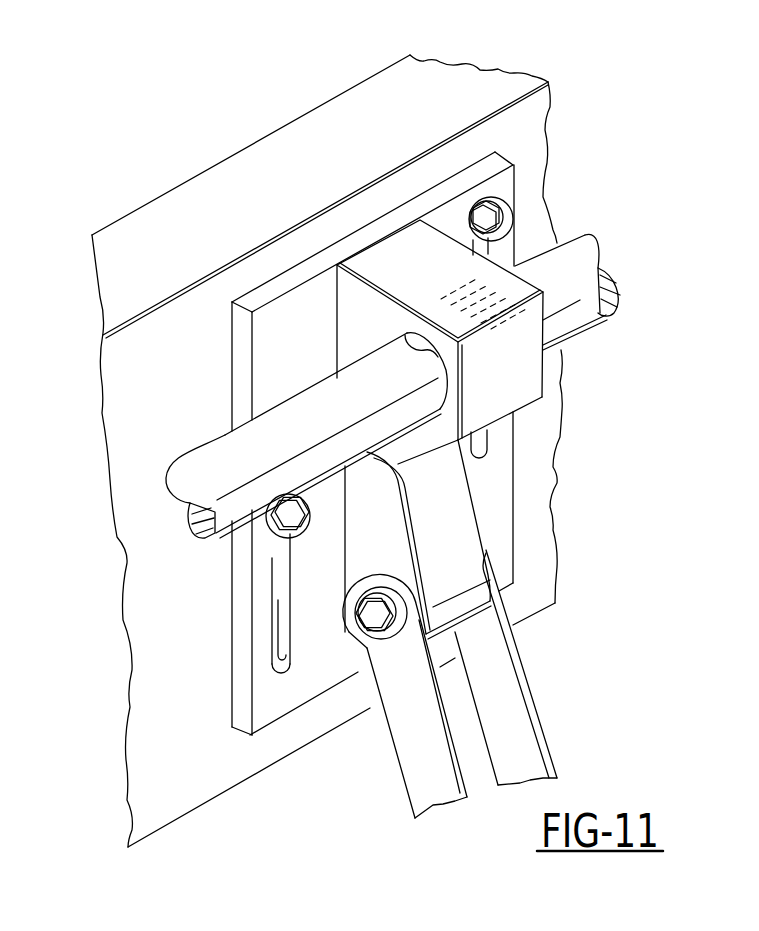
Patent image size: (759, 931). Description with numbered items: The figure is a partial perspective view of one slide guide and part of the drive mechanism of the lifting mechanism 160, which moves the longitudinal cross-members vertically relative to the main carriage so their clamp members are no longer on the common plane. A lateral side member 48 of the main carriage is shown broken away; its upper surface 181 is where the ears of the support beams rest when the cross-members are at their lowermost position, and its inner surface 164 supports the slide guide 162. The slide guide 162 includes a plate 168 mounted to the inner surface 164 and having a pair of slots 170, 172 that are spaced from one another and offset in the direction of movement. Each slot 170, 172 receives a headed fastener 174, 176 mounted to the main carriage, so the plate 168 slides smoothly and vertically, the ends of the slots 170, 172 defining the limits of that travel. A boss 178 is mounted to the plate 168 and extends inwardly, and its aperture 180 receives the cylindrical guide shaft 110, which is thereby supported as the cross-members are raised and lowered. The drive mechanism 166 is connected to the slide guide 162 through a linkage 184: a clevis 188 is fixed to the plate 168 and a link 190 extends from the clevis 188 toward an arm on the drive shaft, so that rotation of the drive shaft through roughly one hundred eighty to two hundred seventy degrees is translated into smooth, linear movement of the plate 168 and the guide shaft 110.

The lateral side member 48 is at (301, 118).
The upper surface 181 is at (183, 203).
The inner surface 164 is at (130, 410).
The slide guide 162 is at (232, 362).
The plate 168 is at (310, 294).
The slot 170 is at (273, 653).
The headed fastener 174 is at (304, 522).
The headed fastener 176 is at (504, 218).
The guide shaft 110 is at (290, 418).
The boss 178 is at (520, 366).
The aperture 180 is at (407, 334).
The slot 172 is at (478, 446).
The clevis 188 is at (468, 518).
The link 190 is at (500, 634).
The linkage 184 is at (380, 775).
The drive mechanism 166 is at (575, 722).
The lifting mechanism 160 is at (653, 168).